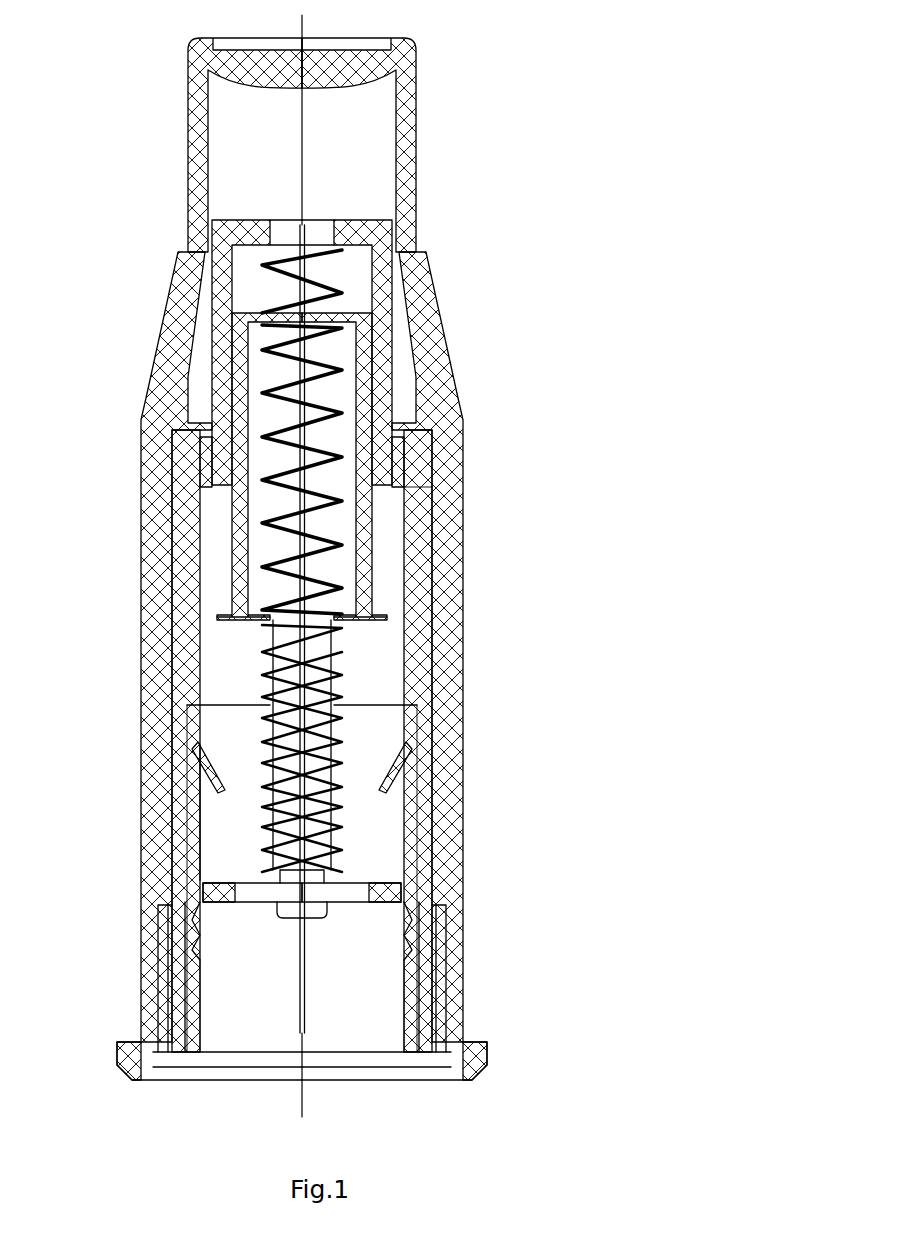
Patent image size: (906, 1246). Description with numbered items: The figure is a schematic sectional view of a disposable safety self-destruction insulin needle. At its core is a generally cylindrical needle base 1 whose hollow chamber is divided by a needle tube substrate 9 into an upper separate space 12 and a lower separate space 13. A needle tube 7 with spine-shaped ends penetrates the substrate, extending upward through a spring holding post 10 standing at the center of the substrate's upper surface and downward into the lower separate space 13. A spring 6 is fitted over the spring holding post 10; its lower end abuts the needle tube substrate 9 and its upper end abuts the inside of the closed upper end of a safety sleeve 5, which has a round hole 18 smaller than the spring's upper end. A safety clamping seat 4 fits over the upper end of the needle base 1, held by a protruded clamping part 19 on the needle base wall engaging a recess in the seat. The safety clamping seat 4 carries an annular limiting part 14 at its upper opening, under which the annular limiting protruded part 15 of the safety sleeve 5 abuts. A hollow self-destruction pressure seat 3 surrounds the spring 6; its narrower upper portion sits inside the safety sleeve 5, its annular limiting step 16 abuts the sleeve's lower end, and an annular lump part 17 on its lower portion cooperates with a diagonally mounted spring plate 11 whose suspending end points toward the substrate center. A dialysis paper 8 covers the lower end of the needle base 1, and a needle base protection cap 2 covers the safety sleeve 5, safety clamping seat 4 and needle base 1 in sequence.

The needle base 1 is at (463, 798).
The needle base protection cap 2 is at (440, 525).
The self-destruction pressure seat 3 is at (250, 523).
The safety clamping seat 4 is at (405, 700).
The safety sleeve 5 is at (320, 450).
The spring 6 is at (318, 486).
The needle tube 7 is at (220, 605).
The dialysis paper 8 is at (373, 1077).
The needle tube substrate 9 is at (350, 880).
The spring holding post 10 is at (245, 810).
The spring plate 11 is at (222, 800).
The upper separate space 12 is at (232, 700).
The lower separate space 13 is at (222, 968).
The annular limiting part 14 is at (392, 445).
The annular limiting protruded part 15 is at (405, 470).
The annular limiting step 16 is at (208, 466).
The annular lump part 17 is at (262, 483).
The round hole 18 is at (313, 233).
The protruded clamping part 19 is at (230, 727).